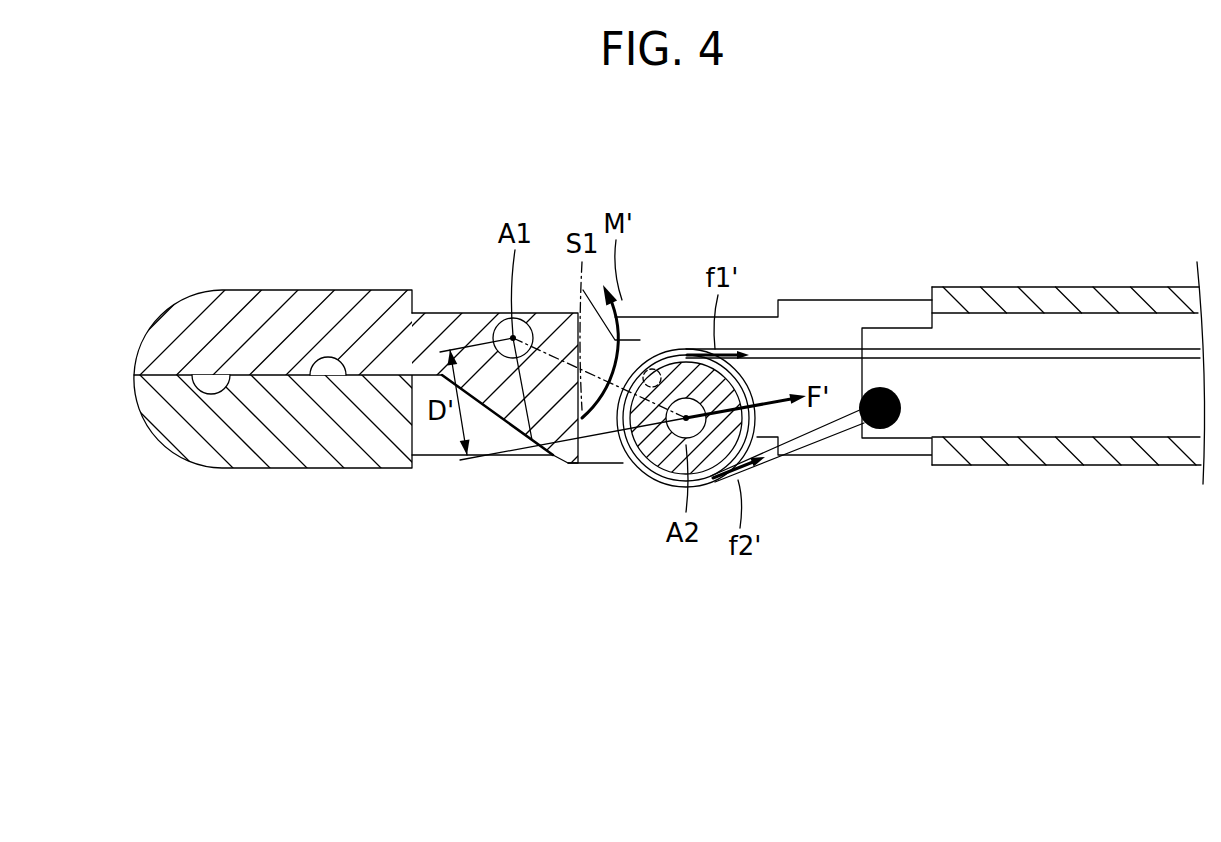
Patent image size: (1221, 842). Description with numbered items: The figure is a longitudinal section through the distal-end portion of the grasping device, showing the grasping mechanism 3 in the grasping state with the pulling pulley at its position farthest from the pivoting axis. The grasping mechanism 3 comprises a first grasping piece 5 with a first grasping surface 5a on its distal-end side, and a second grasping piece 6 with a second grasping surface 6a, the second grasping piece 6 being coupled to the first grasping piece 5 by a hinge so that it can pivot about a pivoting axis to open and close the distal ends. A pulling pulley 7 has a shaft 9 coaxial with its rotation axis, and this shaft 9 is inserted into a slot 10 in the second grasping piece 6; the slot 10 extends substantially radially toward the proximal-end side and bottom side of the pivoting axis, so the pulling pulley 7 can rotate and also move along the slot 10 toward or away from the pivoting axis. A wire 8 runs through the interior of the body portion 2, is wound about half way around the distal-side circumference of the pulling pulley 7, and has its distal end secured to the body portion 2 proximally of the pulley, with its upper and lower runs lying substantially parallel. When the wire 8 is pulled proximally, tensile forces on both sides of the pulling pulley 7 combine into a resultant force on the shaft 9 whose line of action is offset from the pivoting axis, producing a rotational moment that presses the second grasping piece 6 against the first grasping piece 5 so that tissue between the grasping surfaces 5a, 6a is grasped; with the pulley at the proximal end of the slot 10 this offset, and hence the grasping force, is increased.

The body portion 2 is at (1070, 287).
The grasping mechanism 3 is at (258, 141).
The first grasping piece 5 is at (240, 468).
The first grasping surface 5a is at (336, 360).
The second grasping piece 6 is at (344, 290).
The second grasping surface 6a is at (216, 392).
The pulling pulley 7 is at (633, 450).
The wire 8 is at (820, 349).
The shaft 9 is at (672, 445).
The slot 10 is at (652, 368).